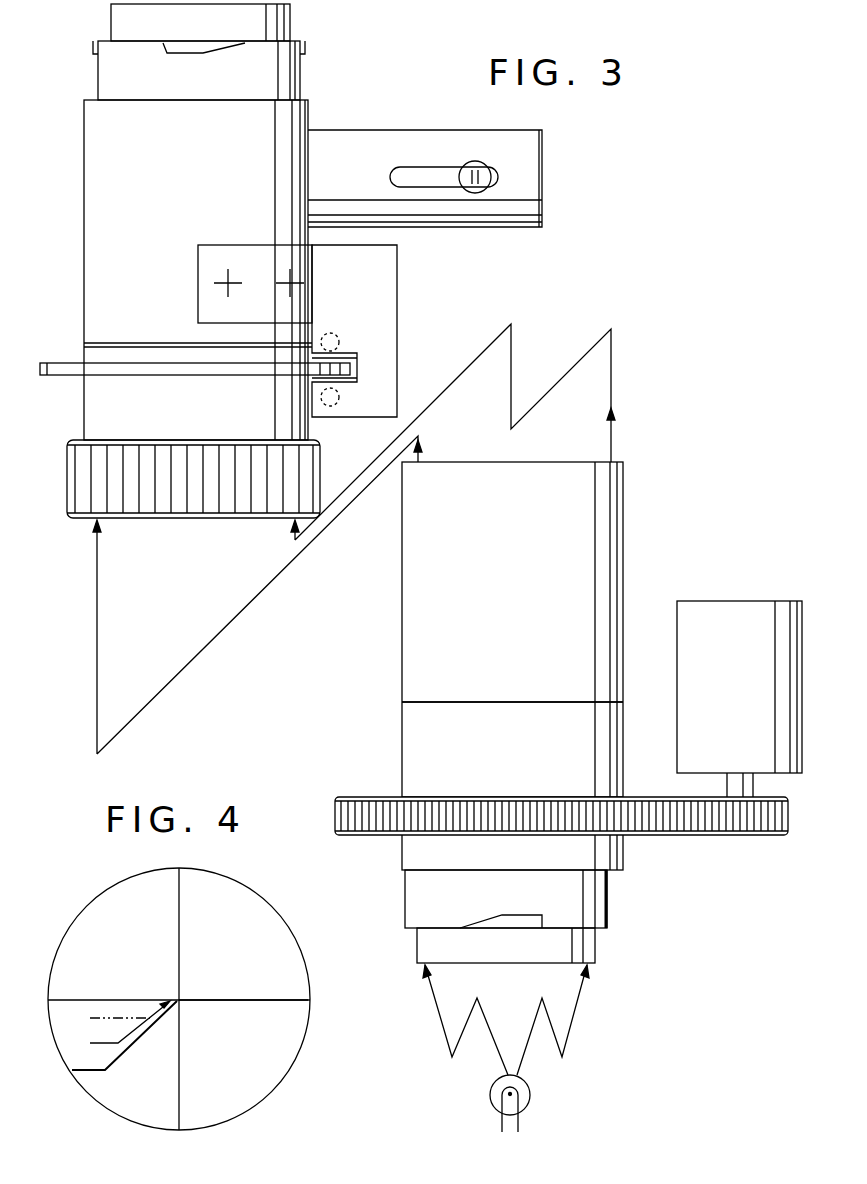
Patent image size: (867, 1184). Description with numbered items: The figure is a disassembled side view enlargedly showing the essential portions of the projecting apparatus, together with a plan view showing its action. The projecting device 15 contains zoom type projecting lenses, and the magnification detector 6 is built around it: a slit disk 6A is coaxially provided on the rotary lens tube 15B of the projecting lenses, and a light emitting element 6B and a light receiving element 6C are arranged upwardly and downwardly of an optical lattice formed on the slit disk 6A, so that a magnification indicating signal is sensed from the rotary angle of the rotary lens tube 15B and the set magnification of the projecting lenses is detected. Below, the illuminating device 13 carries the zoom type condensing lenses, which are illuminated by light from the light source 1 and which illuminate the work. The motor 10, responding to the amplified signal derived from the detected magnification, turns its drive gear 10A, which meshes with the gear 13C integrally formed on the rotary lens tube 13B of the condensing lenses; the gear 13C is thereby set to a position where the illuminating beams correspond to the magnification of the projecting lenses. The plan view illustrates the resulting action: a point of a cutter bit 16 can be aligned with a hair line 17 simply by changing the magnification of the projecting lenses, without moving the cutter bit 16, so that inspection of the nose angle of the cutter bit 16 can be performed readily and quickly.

In FIG. 3, the light source 1 is at (530, 1086).
In FIG. 3, the magnification detector 6 is at (410, 326).
In FIG. 3, the slit disk 6A is at (55, 363).
In FIG. 3, the light emitting element 6B is at (338, 335).
In FIG. 3, the light receiving element 6C is at (332, 407).
In FIG. 3, the motor 10 is at (742, 601).
In FIG. 3, the drive gear 10A is at (755, 837).
In FIG. 3, the illuminating device 13 is at (645, 538).
In FIG. 3, the rotary lens tube 13B is at (402, 722).
In FIG. 3, the gear 13C is at (360, 785).
In FIG. 3, the projecting device 15 is at (340, 104).
In FIG. 3, the rotary lens tube 15B is at (90, 415).
In FIG. 4, the cutter bit 16 is at (83, 999).
In FIG. 4, the hair line 17 is at (275, 1000).